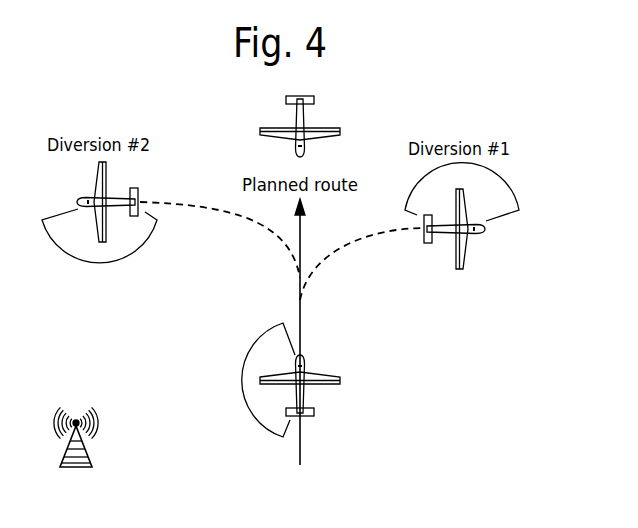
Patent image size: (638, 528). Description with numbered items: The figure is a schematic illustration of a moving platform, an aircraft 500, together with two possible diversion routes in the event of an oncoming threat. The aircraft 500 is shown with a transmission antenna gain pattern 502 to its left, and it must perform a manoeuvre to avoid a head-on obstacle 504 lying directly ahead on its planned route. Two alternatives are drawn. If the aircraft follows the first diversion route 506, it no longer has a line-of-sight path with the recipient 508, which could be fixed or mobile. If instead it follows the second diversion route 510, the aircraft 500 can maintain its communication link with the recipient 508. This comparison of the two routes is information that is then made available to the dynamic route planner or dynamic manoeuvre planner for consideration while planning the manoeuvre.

The aircraft 500 is at (333, 385).
The transmission antenna gain pattern 502 is at (250, 393).
The head-on obstacle 504 is at (330, 128).
The diversion route #1 506 is at (360, 240).
The recipient 508 is at (90, 462).
The diversion route #2 510 is at (232, 212).